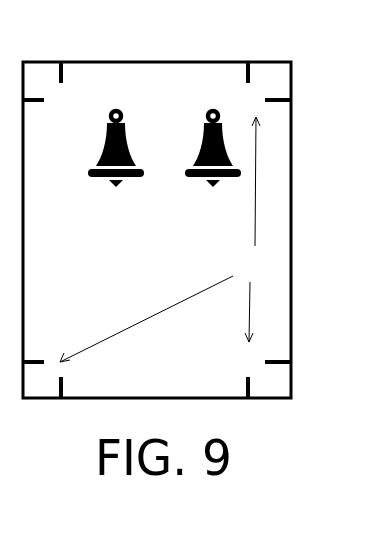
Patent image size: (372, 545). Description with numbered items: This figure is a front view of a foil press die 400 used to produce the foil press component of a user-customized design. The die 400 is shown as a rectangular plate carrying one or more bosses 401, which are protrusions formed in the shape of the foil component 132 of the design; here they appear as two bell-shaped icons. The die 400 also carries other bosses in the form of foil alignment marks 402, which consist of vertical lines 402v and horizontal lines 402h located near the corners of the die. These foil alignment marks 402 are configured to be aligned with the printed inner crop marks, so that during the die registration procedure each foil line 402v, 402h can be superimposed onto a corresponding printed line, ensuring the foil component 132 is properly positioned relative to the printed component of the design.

The die 400 is at (103, 272).
The bosses 401 is at (155, 108).
The foil alignment marks 402 is at (170, 239).
The horizontal lines 402h is at (36, 97).
The vertical lines 402v is at (63, 75).
The foil component 132 is at (88, 148).